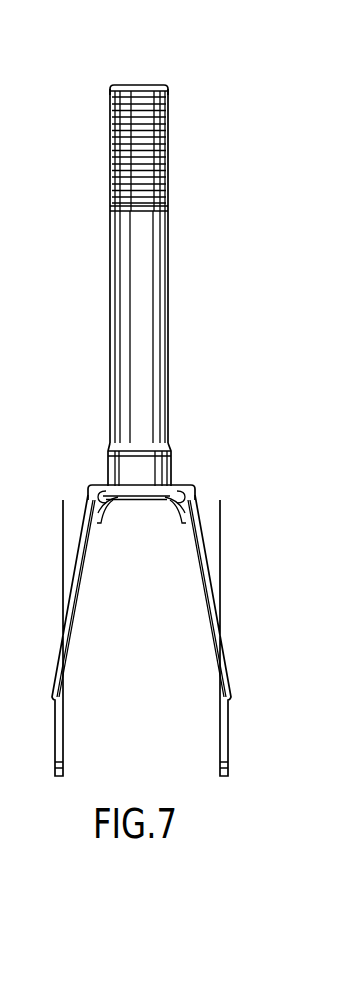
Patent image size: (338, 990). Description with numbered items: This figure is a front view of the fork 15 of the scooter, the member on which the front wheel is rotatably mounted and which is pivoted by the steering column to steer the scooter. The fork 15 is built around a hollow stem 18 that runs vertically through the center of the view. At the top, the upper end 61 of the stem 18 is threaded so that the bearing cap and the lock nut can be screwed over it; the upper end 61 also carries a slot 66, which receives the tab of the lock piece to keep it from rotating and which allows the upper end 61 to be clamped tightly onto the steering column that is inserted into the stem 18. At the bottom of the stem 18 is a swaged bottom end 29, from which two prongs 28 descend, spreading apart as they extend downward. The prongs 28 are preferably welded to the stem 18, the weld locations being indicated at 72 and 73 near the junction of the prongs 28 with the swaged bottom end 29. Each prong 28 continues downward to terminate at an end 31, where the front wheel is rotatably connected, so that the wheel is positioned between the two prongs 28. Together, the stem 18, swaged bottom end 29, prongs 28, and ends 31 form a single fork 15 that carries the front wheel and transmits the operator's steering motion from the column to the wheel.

The fork 15 is at (173, 292).
The stem 18 is at (168, 328).
The upper end 61 is at (168, 92).
The slot 66 is at (168, 148).
The swaged bottom end 29 is at (108, 460).
The weld 72 is at (98, 484).
The weld 73 is at (92, 505).
The prong 28 is at (60, 642).
The end 31 is at (229, 773).